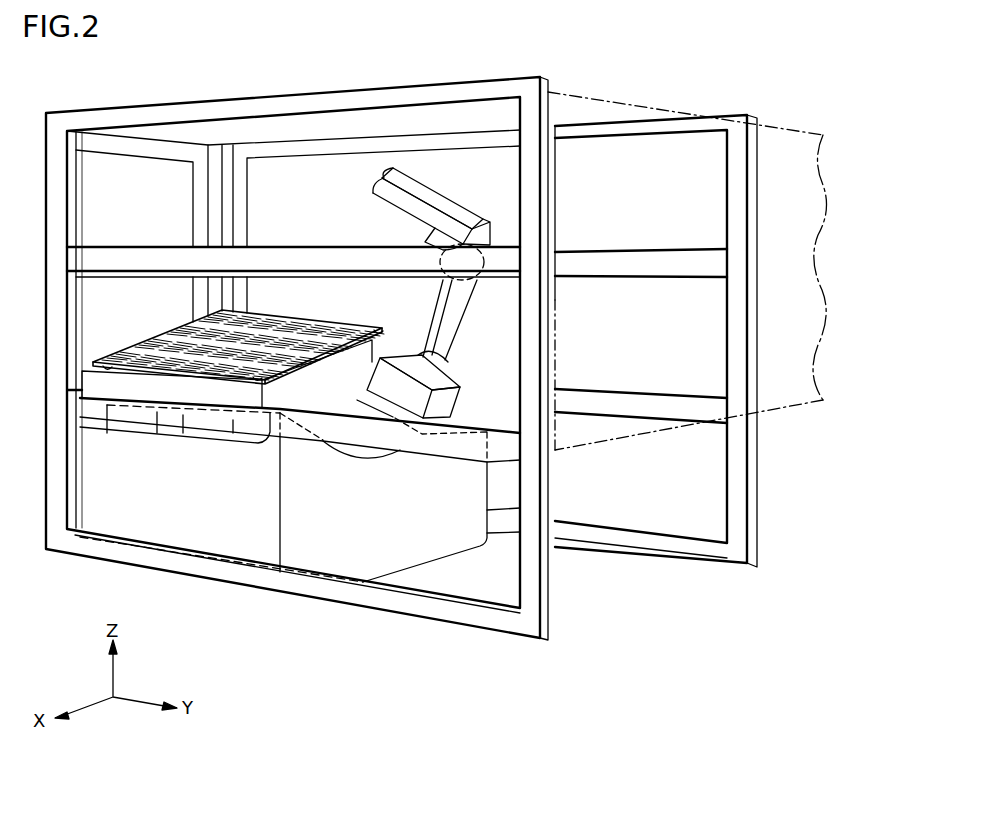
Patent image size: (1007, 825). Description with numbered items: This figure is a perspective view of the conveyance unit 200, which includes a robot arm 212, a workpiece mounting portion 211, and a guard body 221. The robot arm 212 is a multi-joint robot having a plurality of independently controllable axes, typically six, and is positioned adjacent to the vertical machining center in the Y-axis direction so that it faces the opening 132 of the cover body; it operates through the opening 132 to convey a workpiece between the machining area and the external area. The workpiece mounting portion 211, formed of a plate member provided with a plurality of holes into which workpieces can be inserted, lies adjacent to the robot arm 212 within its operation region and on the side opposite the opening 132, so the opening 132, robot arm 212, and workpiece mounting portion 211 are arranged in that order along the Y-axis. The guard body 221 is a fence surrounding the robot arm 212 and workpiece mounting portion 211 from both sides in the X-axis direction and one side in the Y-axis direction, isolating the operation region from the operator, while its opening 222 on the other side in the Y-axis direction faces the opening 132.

The conveyance unit 200 is at (136, 108).
The workpiece mounting portion 211 is at (168, 357).
The robot arm 212 is at (414, 168).
The guard body 221 is at (507, 621).
The opening of guard body 222 is at (717, 552).
The opening 132 is at (555, 315).